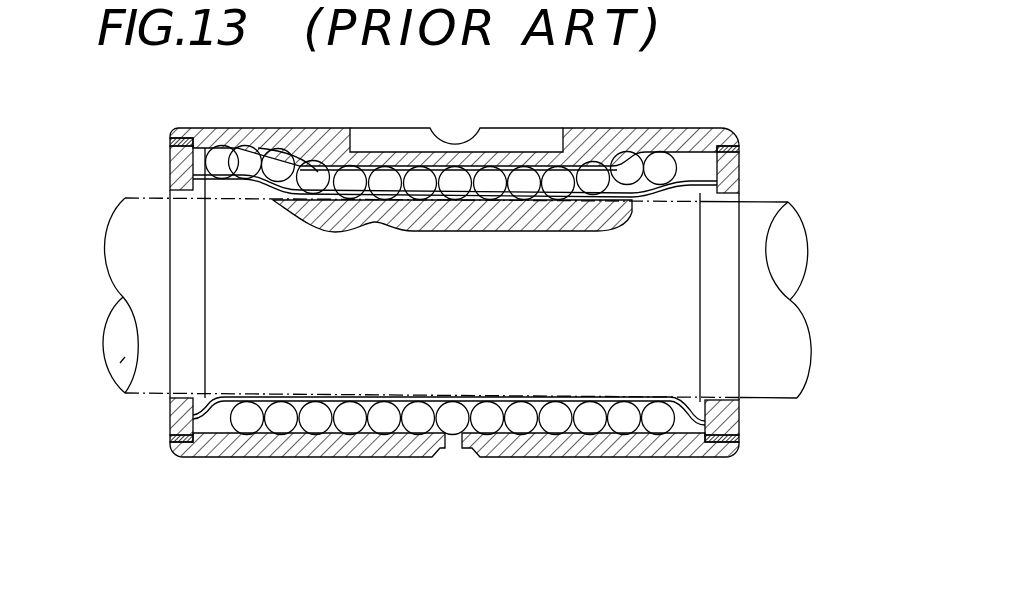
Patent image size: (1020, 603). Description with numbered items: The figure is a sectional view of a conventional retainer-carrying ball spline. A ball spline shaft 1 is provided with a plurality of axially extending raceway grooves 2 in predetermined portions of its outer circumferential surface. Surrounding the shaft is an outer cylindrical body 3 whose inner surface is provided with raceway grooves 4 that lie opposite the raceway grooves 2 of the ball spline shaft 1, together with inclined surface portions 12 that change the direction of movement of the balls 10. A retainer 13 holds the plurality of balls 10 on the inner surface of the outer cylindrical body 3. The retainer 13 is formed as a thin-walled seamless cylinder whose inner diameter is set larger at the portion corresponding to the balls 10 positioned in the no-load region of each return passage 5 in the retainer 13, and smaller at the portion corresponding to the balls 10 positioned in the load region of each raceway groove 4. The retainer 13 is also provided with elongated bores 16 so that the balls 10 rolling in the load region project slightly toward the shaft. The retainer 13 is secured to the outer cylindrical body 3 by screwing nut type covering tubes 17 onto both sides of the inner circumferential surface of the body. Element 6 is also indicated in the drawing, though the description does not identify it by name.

The ball spline shaft 1 is at (113, 379).
The raceway grooves 2 is at (138, 197).
The outer cylindrical body 3 is at (215, 145).
The raceway grooves 4 is at (415, 150).
The return passage 5 is at (382, 396).
The end plate 6 is at (683, 168).
The balls 10 is at (289, 147).
The inclined surface portions 12 is at (610, 165).
The retainer 13 is at (272, 396).
The elongated bores 16 is at (594, 232).
The nut type covering tubes 17 is at (740, 170).